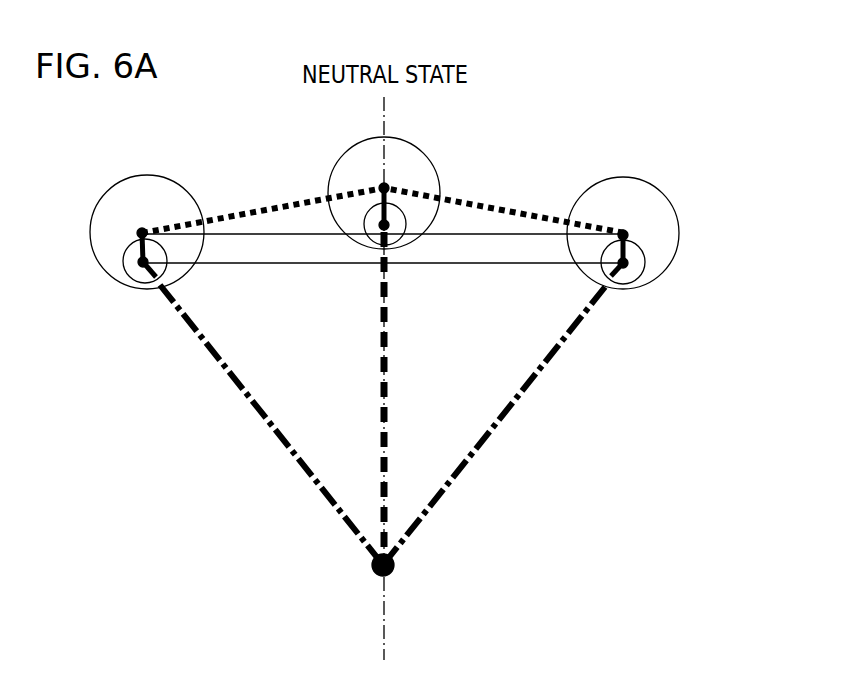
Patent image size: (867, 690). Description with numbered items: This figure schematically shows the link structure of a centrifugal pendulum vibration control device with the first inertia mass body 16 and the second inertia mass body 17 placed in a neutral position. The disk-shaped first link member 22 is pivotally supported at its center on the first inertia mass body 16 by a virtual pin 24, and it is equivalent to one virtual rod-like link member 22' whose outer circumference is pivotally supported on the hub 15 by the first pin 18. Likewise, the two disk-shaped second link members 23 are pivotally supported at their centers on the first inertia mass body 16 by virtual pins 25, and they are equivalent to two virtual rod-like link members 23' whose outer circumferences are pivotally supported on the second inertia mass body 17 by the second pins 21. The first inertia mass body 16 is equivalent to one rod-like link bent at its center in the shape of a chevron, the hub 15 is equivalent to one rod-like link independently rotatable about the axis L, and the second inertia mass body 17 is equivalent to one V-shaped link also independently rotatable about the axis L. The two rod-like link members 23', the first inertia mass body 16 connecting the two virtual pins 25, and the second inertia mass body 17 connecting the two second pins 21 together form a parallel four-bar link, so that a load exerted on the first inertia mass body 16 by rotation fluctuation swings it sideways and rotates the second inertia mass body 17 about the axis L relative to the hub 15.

The hub 15 is at (380, 408).
The first inertia mass body 16 is at (303, 202).
The second inertia mass body 17 is at (235, 388).
The first pin 18 is at (380, 225).
The second pin 21 is at (138, 268).
The first link member 22 is at (412, 193).
The virtual rod-like link member 22' is at (423, 232).
The second link member 23 is at (399, 212).
The virtual rod-like link member 23' is at (402, 242).
The virtual pin 24 is at (384, 188).
The virtual pin 25 is at (142, 230).
The axis L is at (395, 568).